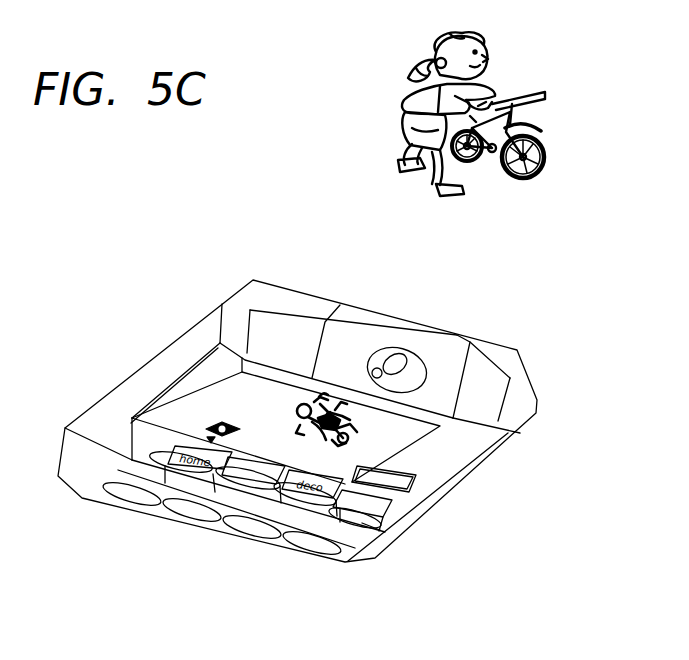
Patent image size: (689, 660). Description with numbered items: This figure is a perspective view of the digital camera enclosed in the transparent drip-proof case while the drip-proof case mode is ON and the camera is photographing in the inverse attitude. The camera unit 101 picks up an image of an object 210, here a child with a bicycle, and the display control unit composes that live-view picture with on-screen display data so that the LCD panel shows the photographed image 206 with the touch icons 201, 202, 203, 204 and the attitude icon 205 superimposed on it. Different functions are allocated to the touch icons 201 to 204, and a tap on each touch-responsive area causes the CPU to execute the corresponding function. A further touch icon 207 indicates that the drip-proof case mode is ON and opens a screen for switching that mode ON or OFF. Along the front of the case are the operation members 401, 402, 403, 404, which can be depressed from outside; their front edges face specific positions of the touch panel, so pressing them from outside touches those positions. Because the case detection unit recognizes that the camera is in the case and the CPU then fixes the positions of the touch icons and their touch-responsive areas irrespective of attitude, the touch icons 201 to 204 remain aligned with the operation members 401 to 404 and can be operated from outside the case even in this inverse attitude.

The camera unit 101 is at (398, 360).
The touch icon 201 is at (130, 418).
The touch icon 202 is at (268, 447).
The touch icon 203 is at (333, 478).
The touch icon 204 is at (383, 505).
The attitude icon 205 is at (208, 424).
The photographed image 206 is at (397, 443).
The touch icon 207 is at (402, 498).
The object 210 is at (400, 127).
The operation member 401 is at (132, 498).
The operation member 402 is at (192, 514).
The operation member 403 is at (250, 531).
The operation member 404 is at (310, 548).